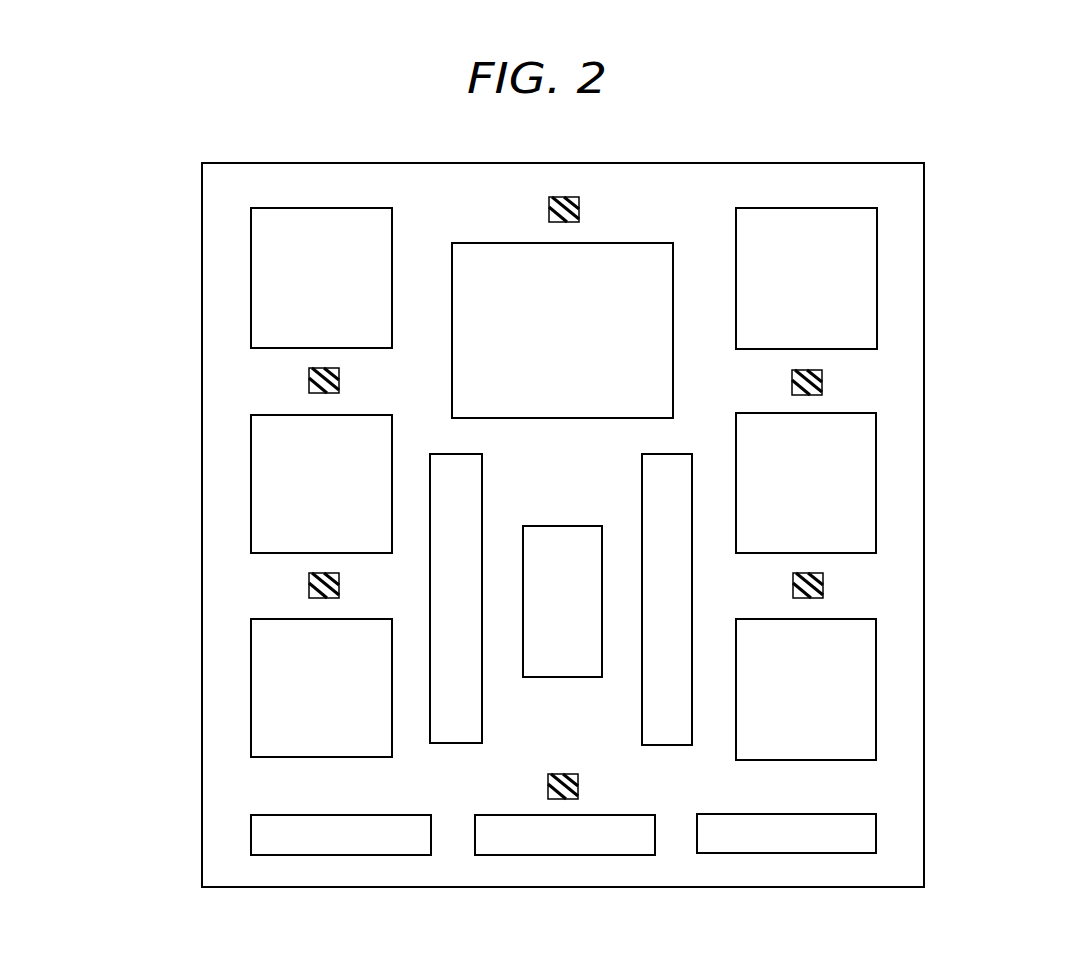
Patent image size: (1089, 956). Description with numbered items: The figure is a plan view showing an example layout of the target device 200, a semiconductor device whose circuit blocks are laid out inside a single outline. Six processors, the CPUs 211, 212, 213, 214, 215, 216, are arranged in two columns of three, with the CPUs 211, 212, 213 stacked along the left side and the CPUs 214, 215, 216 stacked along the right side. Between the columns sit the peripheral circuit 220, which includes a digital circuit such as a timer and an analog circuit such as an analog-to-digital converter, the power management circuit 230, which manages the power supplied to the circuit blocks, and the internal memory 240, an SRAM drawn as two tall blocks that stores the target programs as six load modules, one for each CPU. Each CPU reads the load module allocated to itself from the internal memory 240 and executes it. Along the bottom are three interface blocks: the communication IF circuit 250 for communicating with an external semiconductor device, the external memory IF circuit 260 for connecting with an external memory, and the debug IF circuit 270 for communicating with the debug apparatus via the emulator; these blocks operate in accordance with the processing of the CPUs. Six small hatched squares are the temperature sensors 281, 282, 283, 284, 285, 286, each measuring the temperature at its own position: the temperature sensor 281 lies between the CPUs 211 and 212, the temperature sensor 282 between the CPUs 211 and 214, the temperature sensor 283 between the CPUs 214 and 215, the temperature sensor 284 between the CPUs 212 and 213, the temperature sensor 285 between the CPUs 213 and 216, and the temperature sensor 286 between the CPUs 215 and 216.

The target device 200 is at (1069, 176).
The CPU 211 is at (251, 300).
The CPU 212 is at (251, 507).
The CPU 213 is at (251, 700).
The CPU 214 is at (877, 295).
The CPU 215 is at (876, 500).
The CPU 216 is at (876, 700).
The peripheral circuit 220 is at (540, 418).
The power management circuit 230 is at (575, 526).
The internal memory 240 is at (456, 743).
The communication IF circuit 250 is at (251, 833).
The external memory IF circuit 260 is at (500, 815).
The debug IF circuit 270 is at (876, 833).
The temperature sensor 281 is at (309, 388).
The temperature sensor 282 is at (579, 212).
The temperature sensor 283 is at (822, 386).
The temperature sensor 284 is at (309, 594).
The temperature sensor 285 is at (563, 774).
The temperature sensor 286 is at (822, 590).